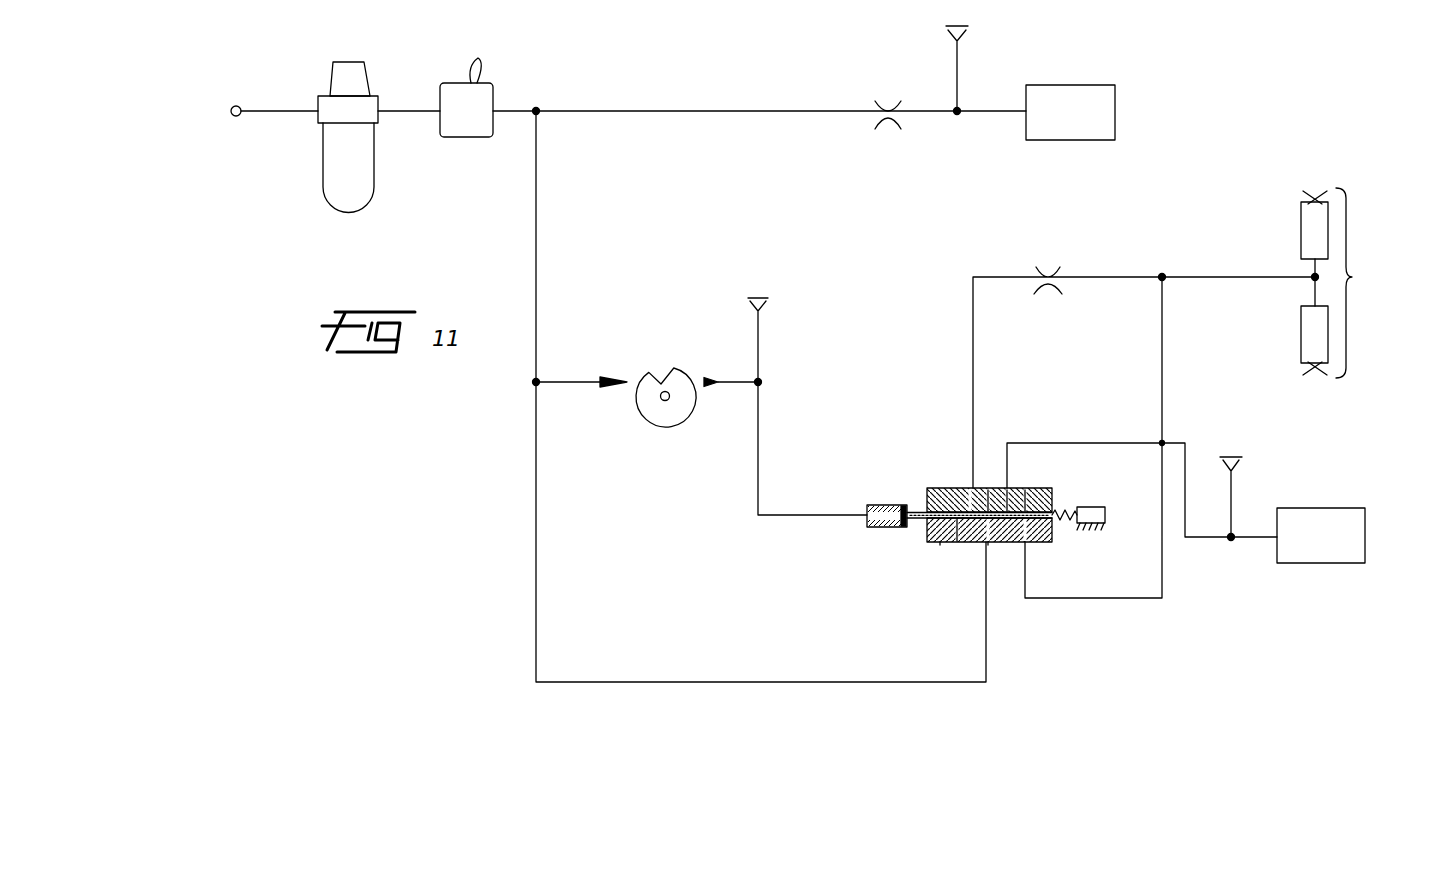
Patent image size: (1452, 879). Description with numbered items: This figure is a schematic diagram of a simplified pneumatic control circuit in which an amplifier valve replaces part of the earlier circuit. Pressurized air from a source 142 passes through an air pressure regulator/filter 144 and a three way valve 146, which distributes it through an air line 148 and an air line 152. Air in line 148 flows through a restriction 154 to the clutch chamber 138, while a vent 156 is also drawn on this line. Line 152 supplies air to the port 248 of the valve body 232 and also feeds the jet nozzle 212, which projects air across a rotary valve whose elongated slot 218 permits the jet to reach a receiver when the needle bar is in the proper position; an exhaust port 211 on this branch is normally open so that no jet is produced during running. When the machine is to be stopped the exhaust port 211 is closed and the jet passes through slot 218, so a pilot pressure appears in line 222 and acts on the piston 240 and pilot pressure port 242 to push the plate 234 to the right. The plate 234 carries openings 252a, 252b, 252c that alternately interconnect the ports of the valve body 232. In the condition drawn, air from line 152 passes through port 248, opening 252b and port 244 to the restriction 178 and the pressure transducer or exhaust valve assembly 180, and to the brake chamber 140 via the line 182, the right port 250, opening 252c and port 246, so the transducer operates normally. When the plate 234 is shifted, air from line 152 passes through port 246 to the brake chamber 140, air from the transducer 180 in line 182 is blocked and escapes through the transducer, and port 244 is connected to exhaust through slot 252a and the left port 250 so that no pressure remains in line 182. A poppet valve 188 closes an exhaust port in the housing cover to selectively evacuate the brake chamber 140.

The clutch chamber 138 is at (1116, 119).
The brake chamber 140 is at (1335, 508).
The source of pressurized air 142 is at (240, 117).
The air pressure regulator/filter 144 is at (370, 207).
The three way valve 146 is at (472, 138).
The air line 148 is at (689, 108).
The air line 152 is at (686, 682).
The restriction 154 is at (887, 102).
The exhaust vent 156 is at (958, 77).
The restriction 178 is at (1046, 275).
The pressure transducer or exhaust valve assembly 180 is at (1352, 283).
The line 182 is at (1133, 598).
The poppet valve 188 is at (1236, 457).
The exhaust port 211 is at (762, 297).
The air jet nozzle 212 is at (614, 374).
The elongated slot 218 is at (684, 380).
The line 222 is at (797, 513).
The valve body 232 is at (940, 543).
The plate 234 is at (1053, 507).
The piston 240 is at (872, 506).
The pilot pressure port 242 is at (868, 521).
The port 244 is at (970, 490).
The port 246 is at (1008, 490).
The port 248 is at (990, 543).
The additional port 250 is at (1025, 543).
The slot 252a is at (930, 530).
The opening 252b is at (992, 490).
The opening 252c is at (1027, 500).